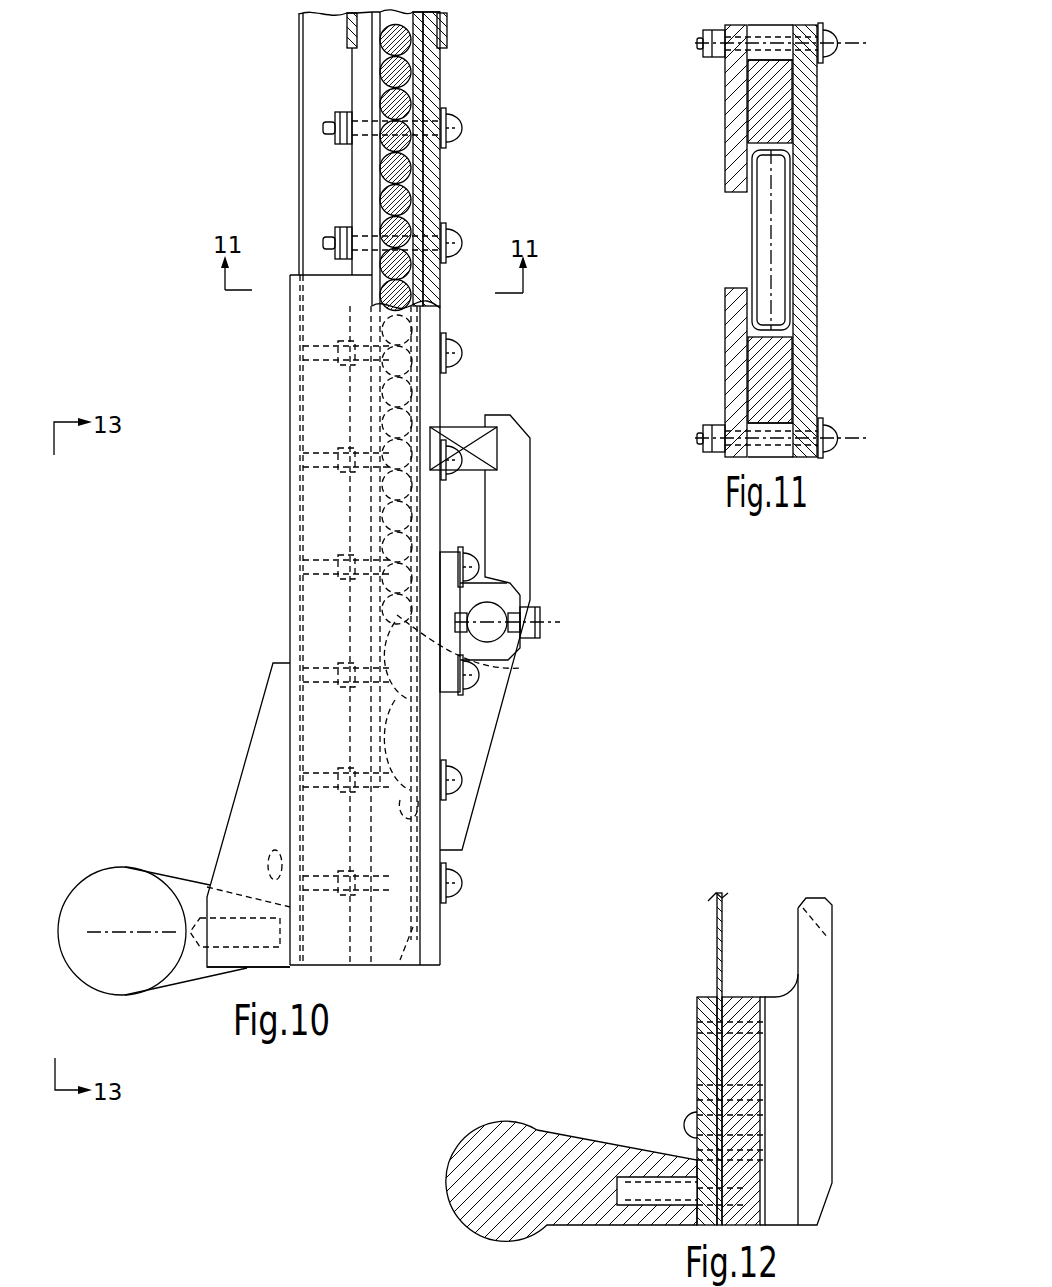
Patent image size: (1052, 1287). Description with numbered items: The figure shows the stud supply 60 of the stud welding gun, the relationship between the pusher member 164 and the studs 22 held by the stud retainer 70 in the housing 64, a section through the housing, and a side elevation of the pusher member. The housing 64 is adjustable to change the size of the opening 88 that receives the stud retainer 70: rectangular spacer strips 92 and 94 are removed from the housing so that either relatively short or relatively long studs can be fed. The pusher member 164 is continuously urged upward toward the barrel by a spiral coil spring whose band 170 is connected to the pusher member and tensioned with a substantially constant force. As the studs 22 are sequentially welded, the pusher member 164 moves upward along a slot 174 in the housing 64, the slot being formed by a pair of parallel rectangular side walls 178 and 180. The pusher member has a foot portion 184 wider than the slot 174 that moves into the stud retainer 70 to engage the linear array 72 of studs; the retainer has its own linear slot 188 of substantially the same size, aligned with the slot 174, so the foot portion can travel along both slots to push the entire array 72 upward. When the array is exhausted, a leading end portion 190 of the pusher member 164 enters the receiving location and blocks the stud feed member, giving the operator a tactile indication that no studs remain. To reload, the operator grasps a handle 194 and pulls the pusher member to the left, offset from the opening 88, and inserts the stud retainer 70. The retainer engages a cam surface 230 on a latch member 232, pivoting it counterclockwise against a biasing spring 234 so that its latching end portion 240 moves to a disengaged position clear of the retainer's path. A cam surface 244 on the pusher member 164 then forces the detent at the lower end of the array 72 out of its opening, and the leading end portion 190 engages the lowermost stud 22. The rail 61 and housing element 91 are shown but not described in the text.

In FIG. 10, the stud 22 is at (385, 108).
In FIG. 11, the stud 22 is at (773, 220).
In FIG. 10, the stud supply 60 is at (245, 647).
In FIG. 11, the stud supply 60 is at (706, 386).
In FIG. 11, the rail 61 is at (830, 336).
In FIG. 10, the housing 64 is at (450, 158).
In FIG. 10, the stud retainer 70 is at (432, 87).
In FIG. 11, the stud retainer 70 is at (805, 142).
In FIG. 10, the linear array of studs 72 is at (353, 172).
In FIG. 11, the linear array of studs 72 is at (745, 236).
In FIG. 10, the opening 88 is at (420, 940).
In FIG. 11, the opening 88 is at (767, 143).
In FIG. 10, the housing 91 is at (382, 838).
In FIG. 11, the spacer strip 92 is at (770, 105).
In FIG. 11, the spacer strip 94 is at (773, 357).
In FIG. 10, the pusher member 164 is at (255, 855).
In FIG. 12, the pusher member 164 is at (668, 1086).
In FIG. 10, the band 170 is at (298, 147).
In FIG. 12, the band 170 is at (717, 960).
In FIG. 10, the slot 174 is at (350, 112).
In FIG. 11, the slot 174 is at (730, 288).
In FIG. 10, the side wall 178 is at (360, 530).
In FIG. 11, the side wall 178 is at (735, 328).
In FIG. 10, the side wall 180 is at (360, 293).
In FIG. 11, the side wall 180 is at (730, 87).
In FIG. 12, the foot portion 184 is at (825, 1023).
In FIG. 11, the linear slot 188 is at (755, 203).
In FIG. 10, the leading end portion 190 is at (515, 668).
In FIG. 12, the leading end portion 190 is at (808, 903).
In FIG. 10, the handle 194 is at (150, 973).
In FIG. 12, the handle 194 is at (527, 1220).
In FIG. 10, the cam surface 230 is at (446, 867).
In FIG. 10, the latch member 232 is at (530, 689).
In FIG. 10, the biasing spring 234 is at (468, 428).
In FIG. 10, the latching end portion 240 is at (418, 800).
In FIG. 10, the cam surface 244 is at (400, 668).
In FIG. 12, the cam surface 244 is at (828, 938).